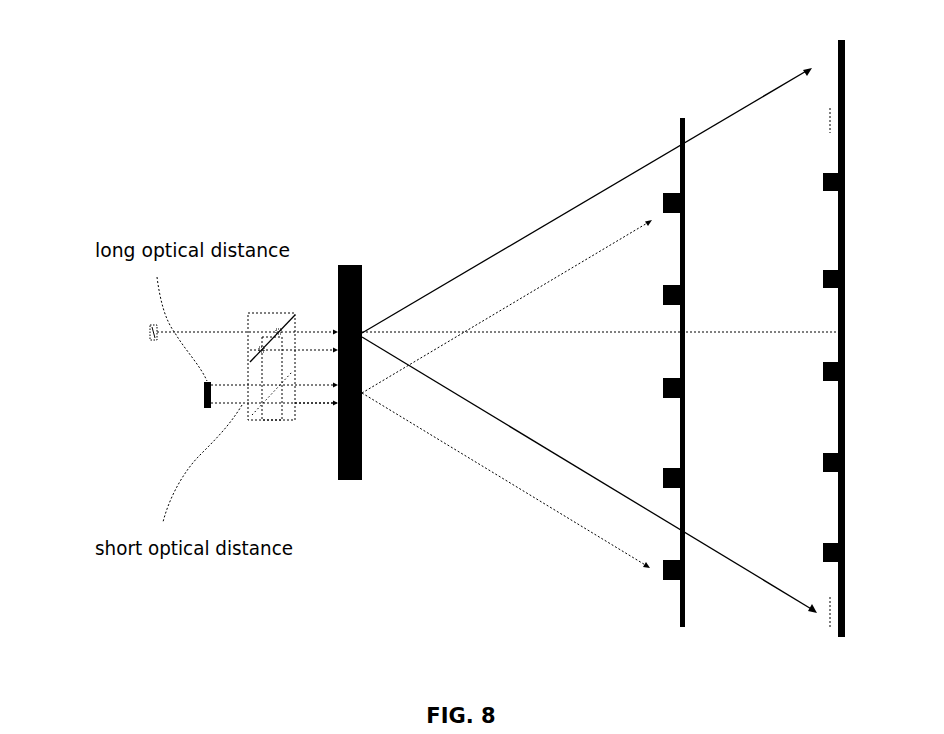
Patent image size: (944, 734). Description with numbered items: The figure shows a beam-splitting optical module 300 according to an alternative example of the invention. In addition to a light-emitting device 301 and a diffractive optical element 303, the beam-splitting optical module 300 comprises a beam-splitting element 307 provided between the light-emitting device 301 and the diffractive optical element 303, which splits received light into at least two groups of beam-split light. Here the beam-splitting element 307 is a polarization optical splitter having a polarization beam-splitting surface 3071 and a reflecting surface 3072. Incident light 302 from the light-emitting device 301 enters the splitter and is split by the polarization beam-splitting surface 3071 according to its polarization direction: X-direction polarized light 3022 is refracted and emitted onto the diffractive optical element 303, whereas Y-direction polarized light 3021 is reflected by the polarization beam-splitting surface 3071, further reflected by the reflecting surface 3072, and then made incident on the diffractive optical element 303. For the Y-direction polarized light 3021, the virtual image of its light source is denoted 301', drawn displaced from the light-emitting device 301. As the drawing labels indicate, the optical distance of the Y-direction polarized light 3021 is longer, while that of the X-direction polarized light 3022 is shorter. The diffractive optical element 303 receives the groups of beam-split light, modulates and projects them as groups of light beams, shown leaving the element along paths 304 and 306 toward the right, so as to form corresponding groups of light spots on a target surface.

The beam-splitting optical module 300 is at (247, 108).
The light-emitting device 301 is at (182, 422).
The virtual image of light source 301' is at (206, 308).
The incident light 302 is at (274, 394).
The Y-direction polarized light 3021 is at (302, 330).
The X-direction polarized light 3022 is at (318, 403).
The diffractive optical element 303 is at (338, 268).
The reflected light path 304 is at (495, 254).
The refracted light path 306 is at (592, 258).
The beam-splitting element 307 is at (268, 450).
The polarization beam-splitting surface 3071 is at (268, 412).
The reflecting surface 3072 is at (250, 352).